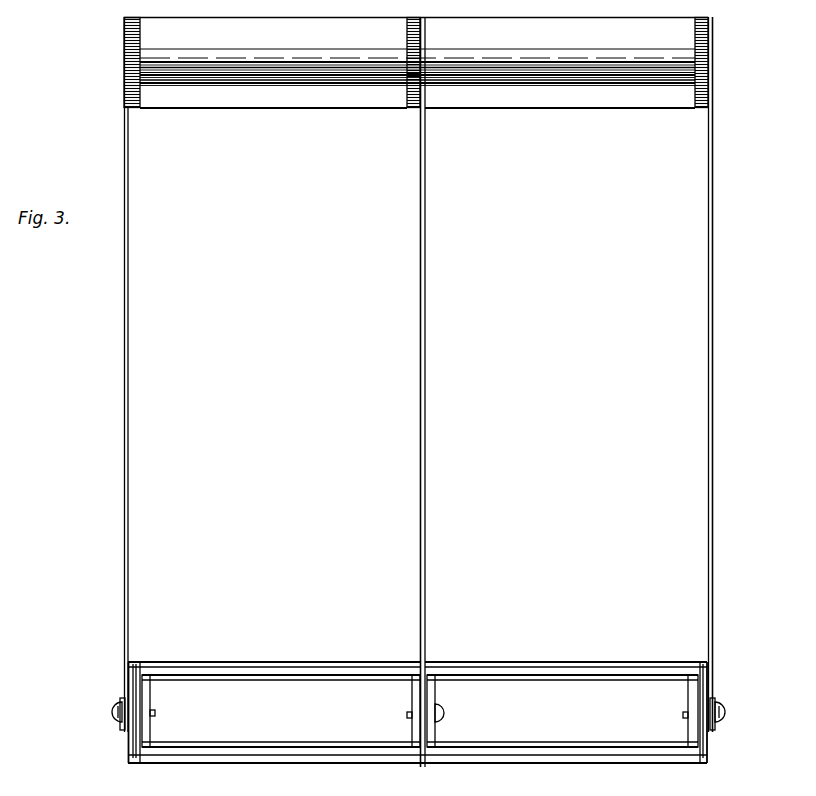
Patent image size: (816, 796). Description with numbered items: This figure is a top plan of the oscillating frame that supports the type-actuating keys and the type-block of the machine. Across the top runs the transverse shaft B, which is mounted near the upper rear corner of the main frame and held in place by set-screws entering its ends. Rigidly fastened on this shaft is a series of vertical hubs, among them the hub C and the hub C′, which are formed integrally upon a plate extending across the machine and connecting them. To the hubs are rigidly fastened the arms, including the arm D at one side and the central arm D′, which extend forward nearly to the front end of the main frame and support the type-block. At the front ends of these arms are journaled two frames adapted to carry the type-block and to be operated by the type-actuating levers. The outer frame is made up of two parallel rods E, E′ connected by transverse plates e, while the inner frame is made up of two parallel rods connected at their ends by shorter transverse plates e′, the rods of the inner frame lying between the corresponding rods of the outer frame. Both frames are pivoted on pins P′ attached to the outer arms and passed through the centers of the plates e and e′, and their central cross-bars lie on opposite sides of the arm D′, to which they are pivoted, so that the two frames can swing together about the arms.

The transverse shaft B is at (262, 54).
The vertical hub C is at (140, 36).
The vertical hub C′ is at (425, 36).
The arm D is at (128, 188).
The arm D′ is at (426, 182).
The rod E is at (240, 666).
The rod E′ is at (292, 762).
The transverse plate e is at (134, 664).
The transverse plate e′ is at (145, 697).
The pin P′ is at (155, 713).